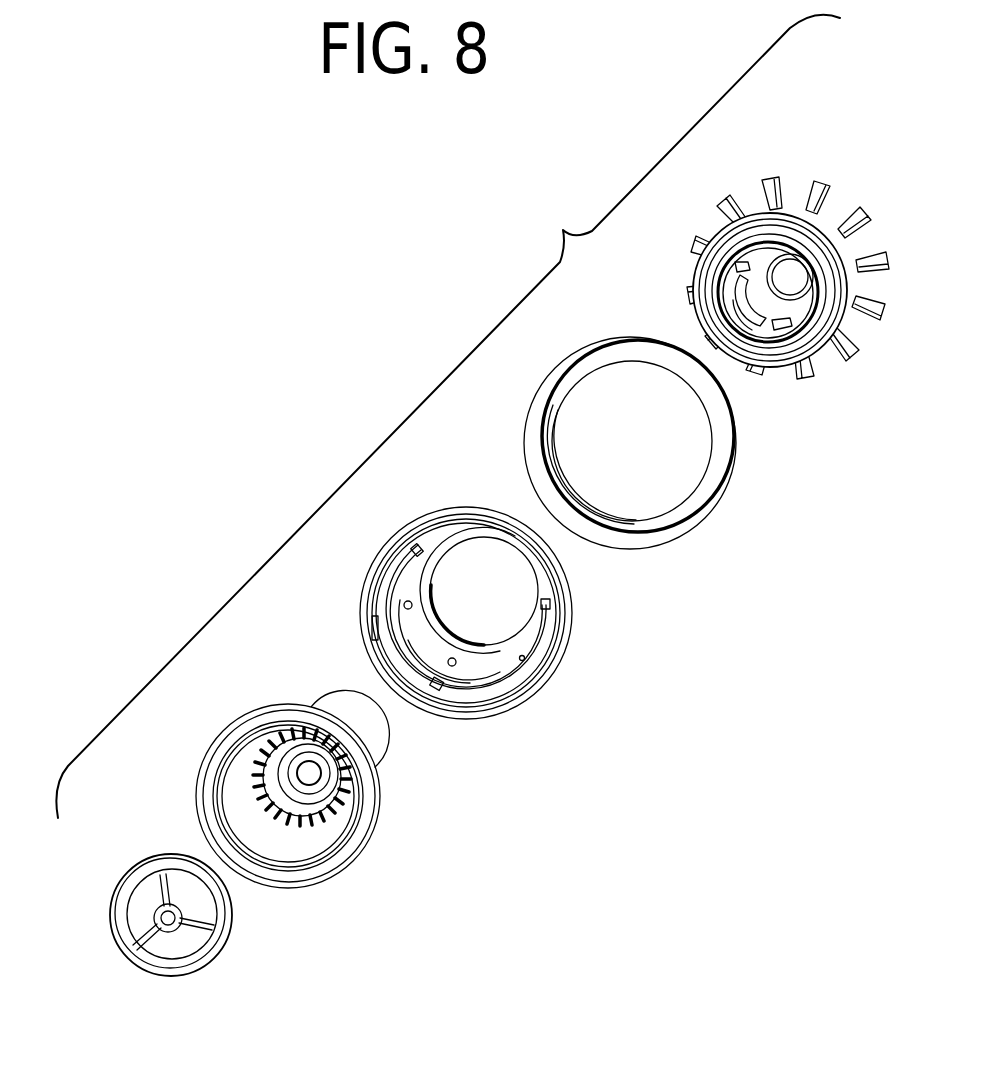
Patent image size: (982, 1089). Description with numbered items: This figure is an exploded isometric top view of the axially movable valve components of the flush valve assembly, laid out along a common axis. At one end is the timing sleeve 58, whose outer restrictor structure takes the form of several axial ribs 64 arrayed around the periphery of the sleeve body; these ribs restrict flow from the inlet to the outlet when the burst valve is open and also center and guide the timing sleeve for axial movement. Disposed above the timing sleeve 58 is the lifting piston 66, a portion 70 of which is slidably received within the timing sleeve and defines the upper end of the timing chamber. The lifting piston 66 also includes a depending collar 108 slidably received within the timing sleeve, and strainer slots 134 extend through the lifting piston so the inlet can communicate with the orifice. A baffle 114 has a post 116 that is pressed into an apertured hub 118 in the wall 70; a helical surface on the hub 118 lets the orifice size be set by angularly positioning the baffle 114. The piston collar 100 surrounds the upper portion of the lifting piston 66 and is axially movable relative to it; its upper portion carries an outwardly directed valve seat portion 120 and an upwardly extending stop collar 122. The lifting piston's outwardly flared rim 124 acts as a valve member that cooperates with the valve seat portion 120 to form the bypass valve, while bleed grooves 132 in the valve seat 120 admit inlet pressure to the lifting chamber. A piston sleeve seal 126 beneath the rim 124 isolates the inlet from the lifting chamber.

The timing sleeve 58 is at (790, 362).
The axial ribs 64 is at (878, 235).
The lifting piston 66 is at (375, 832).
The portion of the lifting piston 70 is at (320, 800).
The piston collar 100 is at (560, 655).
The depending collar 108 is at (375, 745).
The baffle 114 is at (150, 860).
The post 116 is at (175, 925).
The apertured hub 118 is at (302, 775).
The valve seat portion 120 is at (548, 642).
The stop collar 122 is at (505, 703).
The outwardly flared rim 124 is at (264, 717).
The piston sleeve seal 126 is at (553, 400).
The bleed grooves 132 is at (500, 535).
The strainer slots 134 is at (262, 808).